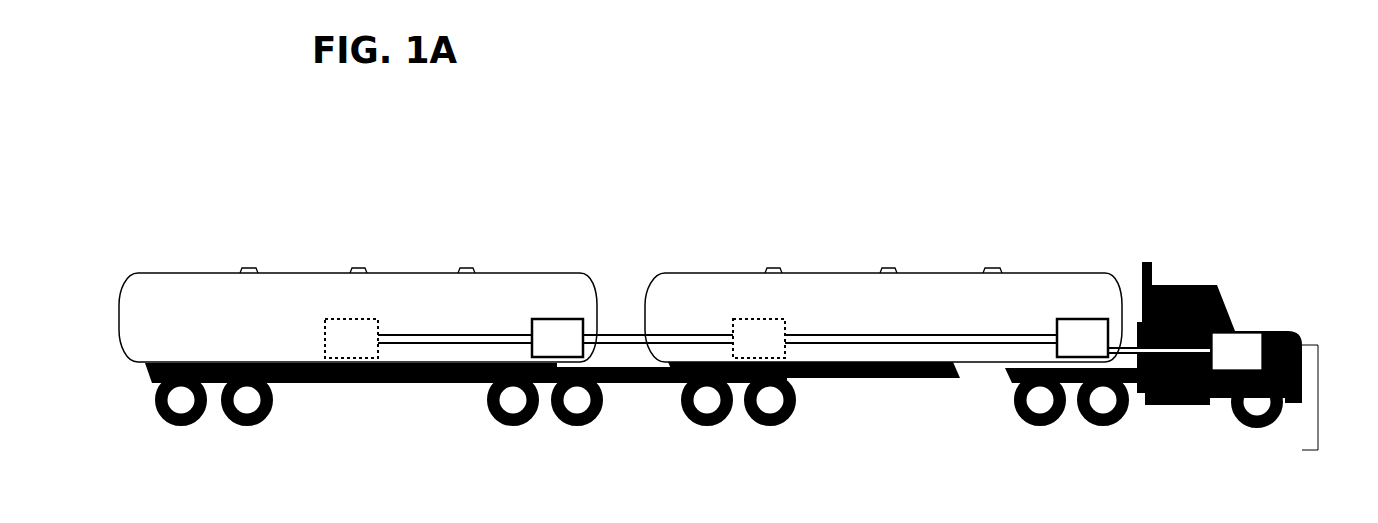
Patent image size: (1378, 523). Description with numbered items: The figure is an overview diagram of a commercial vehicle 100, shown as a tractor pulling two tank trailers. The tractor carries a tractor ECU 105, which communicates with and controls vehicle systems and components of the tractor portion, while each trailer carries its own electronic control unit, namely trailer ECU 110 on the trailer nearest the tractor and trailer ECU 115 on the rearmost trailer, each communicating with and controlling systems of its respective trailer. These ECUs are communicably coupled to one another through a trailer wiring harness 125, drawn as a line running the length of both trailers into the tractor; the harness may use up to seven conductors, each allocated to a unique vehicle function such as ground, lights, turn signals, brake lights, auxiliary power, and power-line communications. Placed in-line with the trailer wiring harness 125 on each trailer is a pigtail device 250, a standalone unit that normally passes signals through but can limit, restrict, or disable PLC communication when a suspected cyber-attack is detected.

The commercial vehicle 100 is at (212, 196).
The tractor ECU 105 is at (1237, 333).
The trailer ECU 110 is at (1073, 318).
The trailer ECU 115 is at (533, 318).
The trailer wiring harness 125 is at (822, 339).
The pigtail device 250 is at (750, 318).